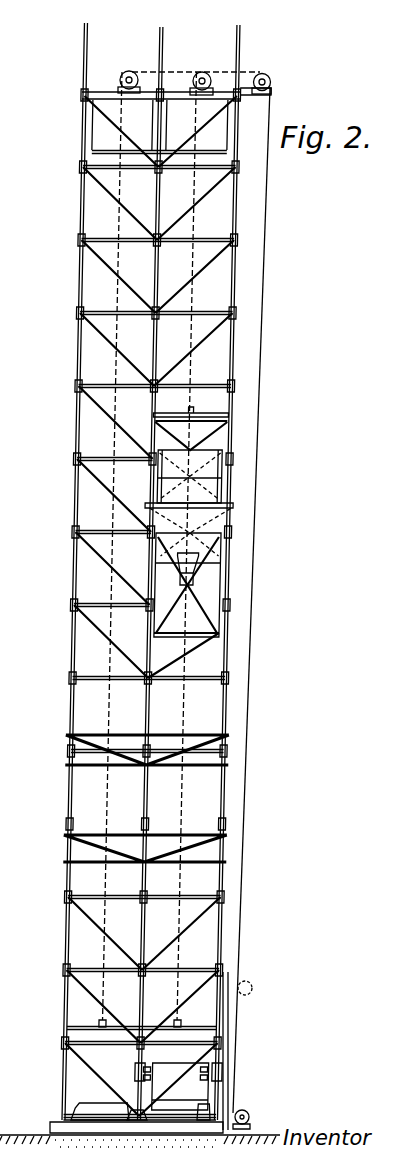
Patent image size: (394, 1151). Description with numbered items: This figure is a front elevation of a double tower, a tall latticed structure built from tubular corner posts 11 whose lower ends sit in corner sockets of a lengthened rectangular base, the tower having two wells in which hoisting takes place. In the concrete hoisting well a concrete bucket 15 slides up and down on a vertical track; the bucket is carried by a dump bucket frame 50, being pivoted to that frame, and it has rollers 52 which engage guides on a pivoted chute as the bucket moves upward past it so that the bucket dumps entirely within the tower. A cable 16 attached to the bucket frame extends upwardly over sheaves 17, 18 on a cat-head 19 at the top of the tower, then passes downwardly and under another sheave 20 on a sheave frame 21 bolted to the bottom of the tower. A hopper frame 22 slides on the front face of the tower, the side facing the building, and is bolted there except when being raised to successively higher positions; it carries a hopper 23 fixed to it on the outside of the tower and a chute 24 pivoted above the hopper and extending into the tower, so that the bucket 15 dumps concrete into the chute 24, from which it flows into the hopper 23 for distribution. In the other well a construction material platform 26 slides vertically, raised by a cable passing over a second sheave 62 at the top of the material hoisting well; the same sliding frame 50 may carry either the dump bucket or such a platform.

The tubular corner posts 11 is at (129, 71).
The concrete bucket 15 is at (187, 1088).
The cable 16 is at (182, 955).
The sheave 17 is at (201, 71).
The sheave 18 is at (262, 73).
The cat-head 19 is at (215, 110).
The sheave 20 is at (244, 1115).
The sheave frame 21 is at (230, 1008).
The hopper frame 22 is at (228, 583).
The hopper 23 is at (213, 522).
The chute 24 is at (234, 469).
The construction material platform 26 is at (80, 1100).
The dump bucket frame 50 is at (130, 1075).
The rollers 52 is at (205, 1075).
The sheave 62 is at (129, 82).